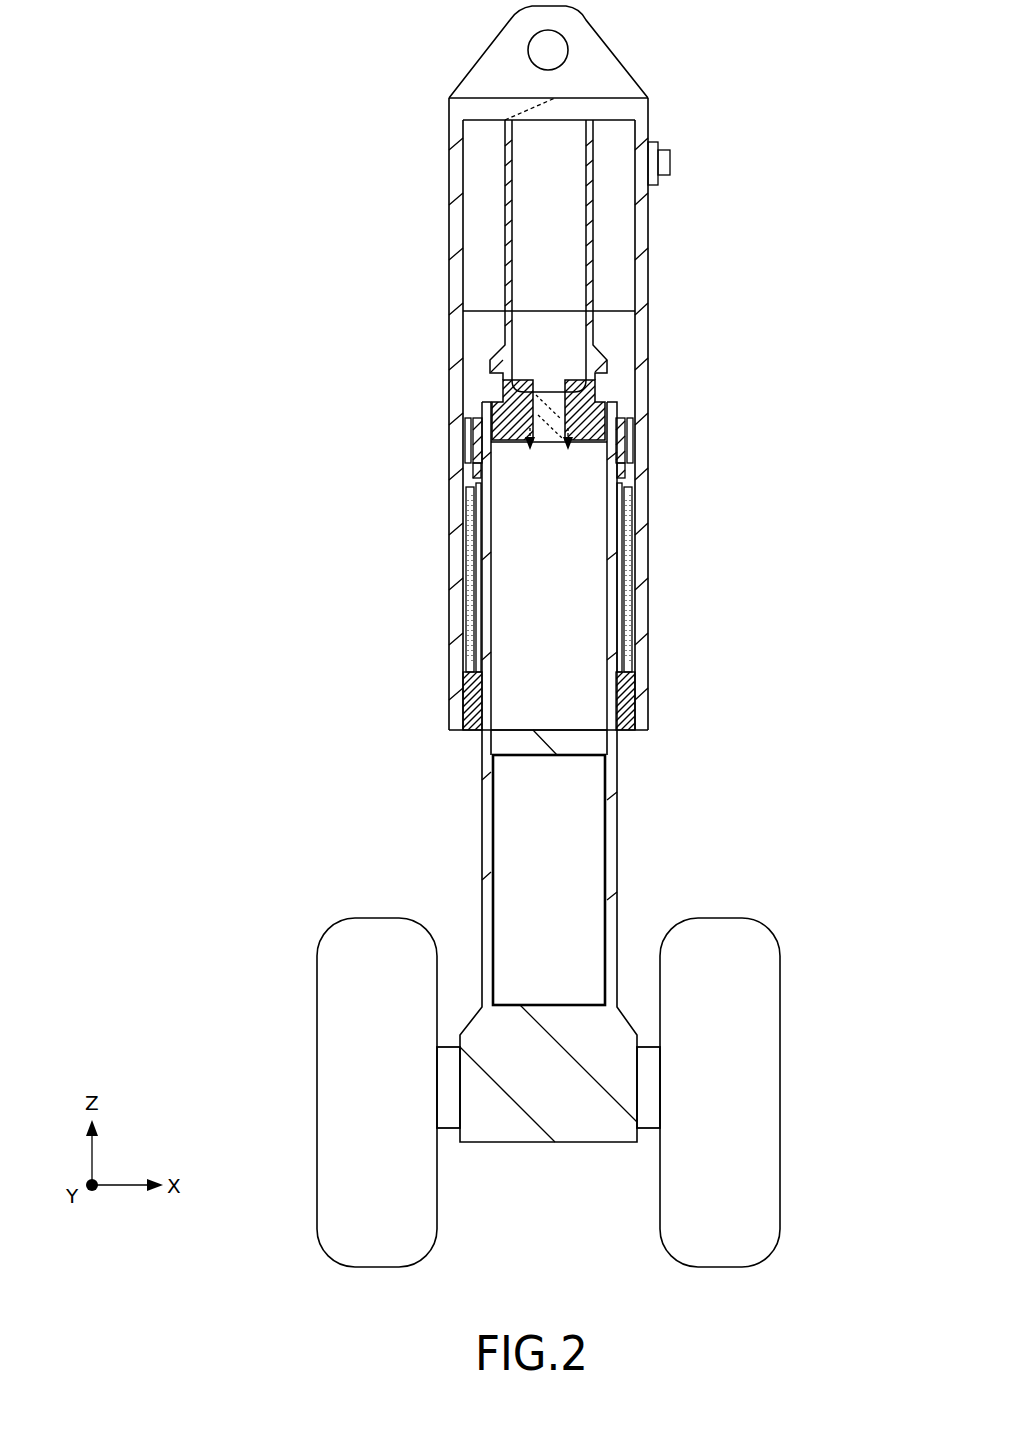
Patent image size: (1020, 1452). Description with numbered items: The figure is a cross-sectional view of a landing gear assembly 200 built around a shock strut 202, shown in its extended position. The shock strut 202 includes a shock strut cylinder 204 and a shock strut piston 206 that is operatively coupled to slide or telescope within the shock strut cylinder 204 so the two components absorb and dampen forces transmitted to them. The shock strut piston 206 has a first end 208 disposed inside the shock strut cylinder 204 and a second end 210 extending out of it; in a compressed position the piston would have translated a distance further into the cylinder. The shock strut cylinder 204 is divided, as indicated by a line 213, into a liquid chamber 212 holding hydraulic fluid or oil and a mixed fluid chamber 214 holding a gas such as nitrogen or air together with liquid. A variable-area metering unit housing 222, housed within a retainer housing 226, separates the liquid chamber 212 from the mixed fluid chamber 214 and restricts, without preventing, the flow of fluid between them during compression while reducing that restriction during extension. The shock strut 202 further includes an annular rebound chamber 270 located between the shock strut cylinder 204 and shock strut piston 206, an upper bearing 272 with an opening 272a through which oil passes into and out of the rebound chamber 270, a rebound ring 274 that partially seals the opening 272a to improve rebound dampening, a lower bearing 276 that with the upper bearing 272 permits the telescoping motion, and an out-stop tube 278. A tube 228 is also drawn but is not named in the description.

The landing gear assembly 200 is at (200, 96).
The shock strut 202 is at (678, 327).
The shock strut cylinder 204 is at (452, 225).
The shock strut piston 206 is at (612, 880).
The first end 208 is at (487, 560).
The second end 210 is at (482, 933).
The liquid chamber 212 is at (587, 578).
The line 213 is at (462, 302).
The mixed fluid chamber 214 is at (622, 142).
The variable-area metering unit housing 222 is at (545, 412).
The retainer housing 226 is at (600, 412).
The orifice support tube 228 is at (597, 258).
The rebound chamber 270 is at (620, 505).
The upper bearing 272 is at (630, 449).
The opening 272a is at (624, 426).
The rebound ring 274 is at (633, 468).
The lower bearing 276 is at (620, 703).
The out-stop tube 278 is at (627, 608).